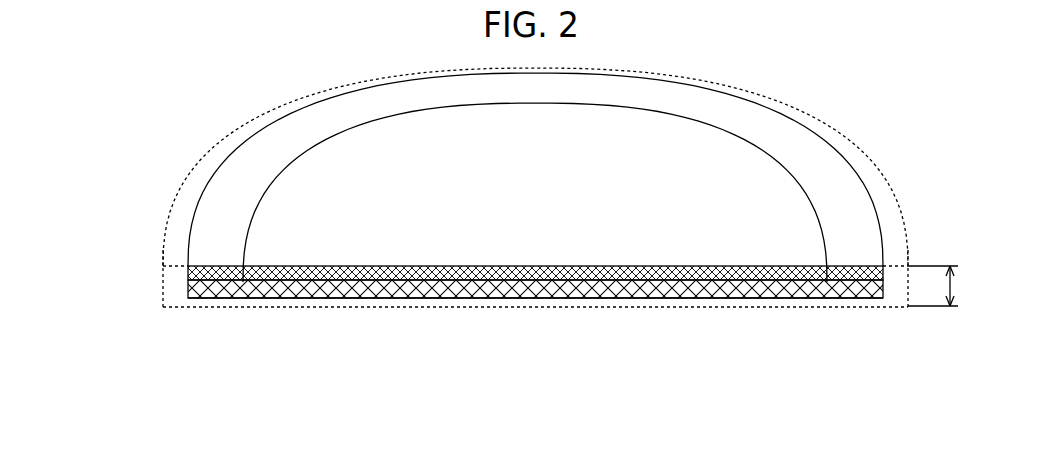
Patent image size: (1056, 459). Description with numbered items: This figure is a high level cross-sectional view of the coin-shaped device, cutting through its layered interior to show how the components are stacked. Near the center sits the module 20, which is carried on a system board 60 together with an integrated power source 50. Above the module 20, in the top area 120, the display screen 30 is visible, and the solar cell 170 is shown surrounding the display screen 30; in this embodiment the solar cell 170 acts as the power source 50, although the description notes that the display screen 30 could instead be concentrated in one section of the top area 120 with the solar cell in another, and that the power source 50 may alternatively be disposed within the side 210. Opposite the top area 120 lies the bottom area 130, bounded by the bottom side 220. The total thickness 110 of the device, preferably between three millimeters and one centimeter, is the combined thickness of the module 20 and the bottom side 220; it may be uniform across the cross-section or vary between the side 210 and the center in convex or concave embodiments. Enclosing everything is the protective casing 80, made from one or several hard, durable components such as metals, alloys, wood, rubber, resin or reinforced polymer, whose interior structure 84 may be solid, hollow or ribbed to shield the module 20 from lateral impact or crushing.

The module 20 is at (857, 177).
The display screen 30 is at (760, 187).
The integrated power source 50 is at (237, 200).
The system board 60 is at (313, 292).
The protective casing 80 is at (166, 304).
The interior structure 84 is at (898, 293).
The thickness 110 is at (958, 283).
The top area 120 is at (379, 111).
The bottom area 130 is at (478, 312).
The solar cell 170 is at (187, 284).
The side 210 is at (161, 282).
The bottom side 220 is at (695, 303).